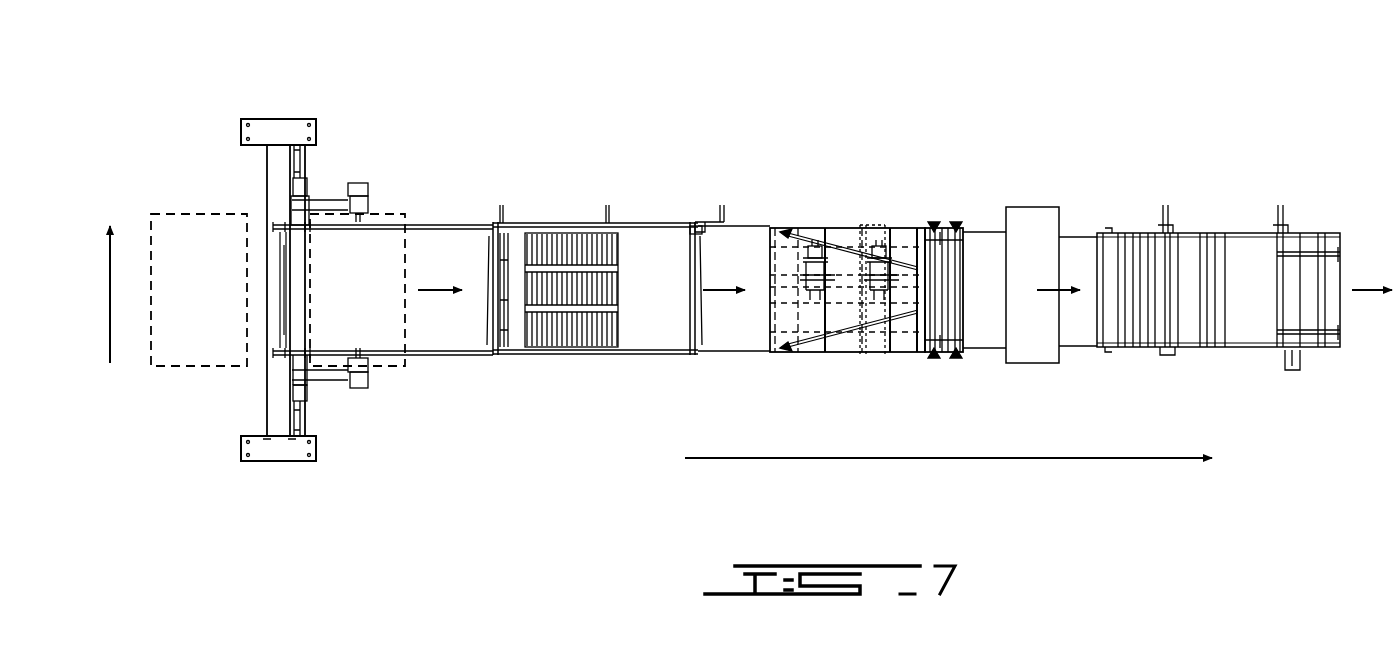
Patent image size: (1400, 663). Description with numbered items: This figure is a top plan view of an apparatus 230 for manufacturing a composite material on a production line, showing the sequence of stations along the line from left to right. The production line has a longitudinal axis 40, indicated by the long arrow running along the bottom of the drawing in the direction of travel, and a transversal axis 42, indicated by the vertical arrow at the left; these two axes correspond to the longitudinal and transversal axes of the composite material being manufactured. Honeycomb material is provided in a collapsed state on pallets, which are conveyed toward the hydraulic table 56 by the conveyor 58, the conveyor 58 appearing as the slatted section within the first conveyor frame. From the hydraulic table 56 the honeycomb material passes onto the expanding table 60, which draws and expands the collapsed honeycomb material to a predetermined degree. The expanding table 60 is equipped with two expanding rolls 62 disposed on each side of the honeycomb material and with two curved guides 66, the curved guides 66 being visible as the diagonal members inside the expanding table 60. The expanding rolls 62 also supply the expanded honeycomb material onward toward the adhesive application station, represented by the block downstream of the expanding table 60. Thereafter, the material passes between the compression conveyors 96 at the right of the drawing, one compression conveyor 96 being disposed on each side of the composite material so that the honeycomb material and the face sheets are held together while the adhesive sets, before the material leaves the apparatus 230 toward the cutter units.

The longitudinal axis 40 is at (1070, 460).
The transversal axis 42 is at (110, 320).
The hydraulic table 56 is at (655, 262).
The conveyor 58 is at (563, 235).
The expanding table 60 is at (833, 368).
The expanding rolls 62 is at (930, 227).
The curved guides 66 is at (893, 228).
The compression conveyors 96 is at (1213, 218).
The apparatus 230 is at (1093, 142).